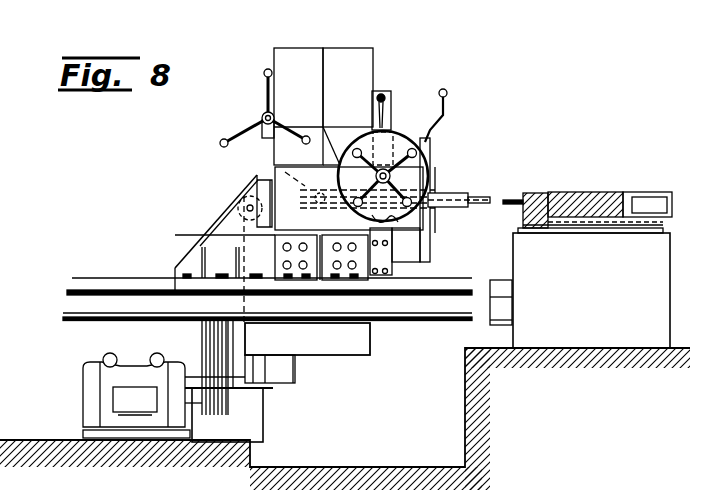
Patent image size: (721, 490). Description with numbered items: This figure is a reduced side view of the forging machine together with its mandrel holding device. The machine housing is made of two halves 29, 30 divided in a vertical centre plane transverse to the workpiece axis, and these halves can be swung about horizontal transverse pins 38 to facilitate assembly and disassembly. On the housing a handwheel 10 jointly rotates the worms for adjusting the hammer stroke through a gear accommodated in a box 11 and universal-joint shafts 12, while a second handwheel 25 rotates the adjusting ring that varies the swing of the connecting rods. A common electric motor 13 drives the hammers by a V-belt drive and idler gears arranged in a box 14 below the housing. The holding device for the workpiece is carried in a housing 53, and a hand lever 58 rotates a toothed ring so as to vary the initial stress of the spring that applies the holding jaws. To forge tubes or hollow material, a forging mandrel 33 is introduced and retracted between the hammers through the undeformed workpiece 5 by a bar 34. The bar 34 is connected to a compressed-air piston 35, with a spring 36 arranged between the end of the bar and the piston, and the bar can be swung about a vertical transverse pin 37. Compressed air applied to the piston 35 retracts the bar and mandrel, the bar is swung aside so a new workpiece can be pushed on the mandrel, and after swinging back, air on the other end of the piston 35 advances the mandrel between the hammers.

The machine housing half 30 is at (298, 68).
The machine housing half 29 is at (358, 67).
The universal-joint shaft 12 is at (393, 103).
The handwheel 25 is at (252, 120).
The hand lever 58 is at (445, 113).
The handwheel 10 is at (428, 163).
The workpiece 5 is at (458, 193).
The bar 34 is at (483, 197).
The forging mandrel 33 is at (273, 165).
The horizontal transverse pin 38 is at (245, 204).
The housing 53 is at (425, 238).
The box 11 is at (394, 218).
The box 14 is at (262, 343).
The electric motor 13 is at (107, 387).
The spring 36 is at (588, 192).
The compressed-air piston 35 is at (634, 213).
The vertical transverse pin 37 is at (535, 228).